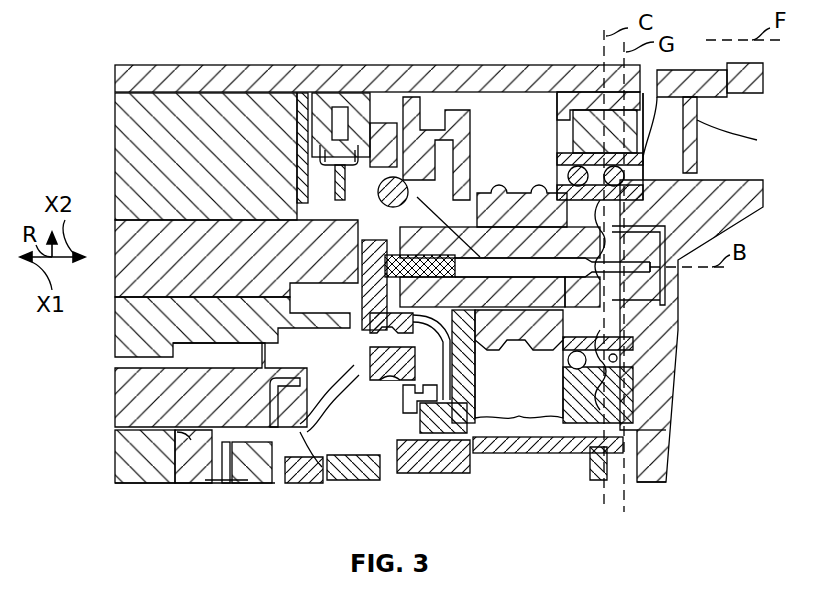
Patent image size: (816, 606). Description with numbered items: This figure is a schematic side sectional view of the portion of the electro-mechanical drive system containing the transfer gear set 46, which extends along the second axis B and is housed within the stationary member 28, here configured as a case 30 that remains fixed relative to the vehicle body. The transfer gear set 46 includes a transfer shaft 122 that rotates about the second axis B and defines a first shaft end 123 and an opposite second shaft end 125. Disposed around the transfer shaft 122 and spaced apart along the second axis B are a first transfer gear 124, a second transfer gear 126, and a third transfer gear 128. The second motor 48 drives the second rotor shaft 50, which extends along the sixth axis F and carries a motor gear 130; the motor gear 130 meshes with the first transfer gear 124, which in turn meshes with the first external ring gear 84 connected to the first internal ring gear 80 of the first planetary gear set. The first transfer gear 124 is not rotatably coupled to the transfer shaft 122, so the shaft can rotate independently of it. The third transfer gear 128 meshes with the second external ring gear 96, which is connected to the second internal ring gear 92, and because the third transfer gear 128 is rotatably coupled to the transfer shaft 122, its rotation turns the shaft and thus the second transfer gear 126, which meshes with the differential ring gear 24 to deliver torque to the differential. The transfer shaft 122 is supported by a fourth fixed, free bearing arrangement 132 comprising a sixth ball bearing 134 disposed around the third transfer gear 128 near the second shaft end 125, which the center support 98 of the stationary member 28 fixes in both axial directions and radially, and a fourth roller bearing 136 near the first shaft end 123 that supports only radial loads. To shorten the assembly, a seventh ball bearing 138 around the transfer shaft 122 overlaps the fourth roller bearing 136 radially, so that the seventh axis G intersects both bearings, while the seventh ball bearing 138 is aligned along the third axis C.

The differential ring gear 24 is at (487, 400).
The stationary member 28 is at (670, 482).
The case 30 is at (678, 362).
The transfer gear set 46 is at (516, 190).
The second motor 48 is at (100, 118).
The second rotor shaft 50 is at (508, 82).
The first internal ring gear 80 is at (591, 452).
The first external ring gear 84 is at (666, 462).
The second internal ring gear 92 is at (363, 478).
The second external ring gear 96 is at (444, 457).
The center support 98 is at (320, 474).
The transfer shaft 122 is at (488, 293).
The first shaft end 123 is at (668, 283).
The first transfer gear 124 is at (620, 132).
The second shaft end 125 is at (366, 296).
The second transfer gear 126 is at (540, 189).
The third transfer gear 128 is at (445, 120).
The motor gear 130 is at (580, 107).
The fourth fixed, free bearing arrangement 132 is at (357, 358).
The sixth ball bearing 134 is at (347, 163).
The fourth roller bearing 136 is at (700, 180).
The seventh ball bearing 138 is at (668, 397).